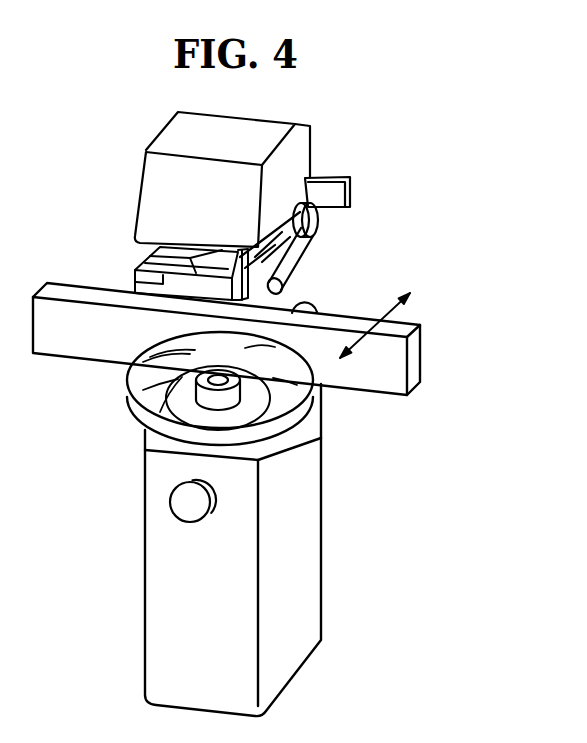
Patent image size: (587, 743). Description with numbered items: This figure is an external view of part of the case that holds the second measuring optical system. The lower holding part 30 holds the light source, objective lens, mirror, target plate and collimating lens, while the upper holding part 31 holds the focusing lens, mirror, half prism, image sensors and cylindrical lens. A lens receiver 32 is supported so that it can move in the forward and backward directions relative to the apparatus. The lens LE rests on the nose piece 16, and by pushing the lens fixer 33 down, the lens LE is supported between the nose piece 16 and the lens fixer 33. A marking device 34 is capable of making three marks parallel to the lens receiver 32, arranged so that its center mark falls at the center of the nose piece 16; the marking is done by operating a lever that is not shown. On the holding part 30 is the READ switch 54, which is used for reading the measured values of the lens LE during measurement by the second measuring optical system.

The holding part 31 is at (165, 195).
The lens fixer 33 is at (140, 268).
The marking device 34 is at (315, 220).
The lens receiver 32 is at (388, 378).
The lens LE is at (140, 420).
The nose piece 16 is at (240, 435).
The holding part 30 is at (268, 565).
The READ switch 54 is at (186, 506).